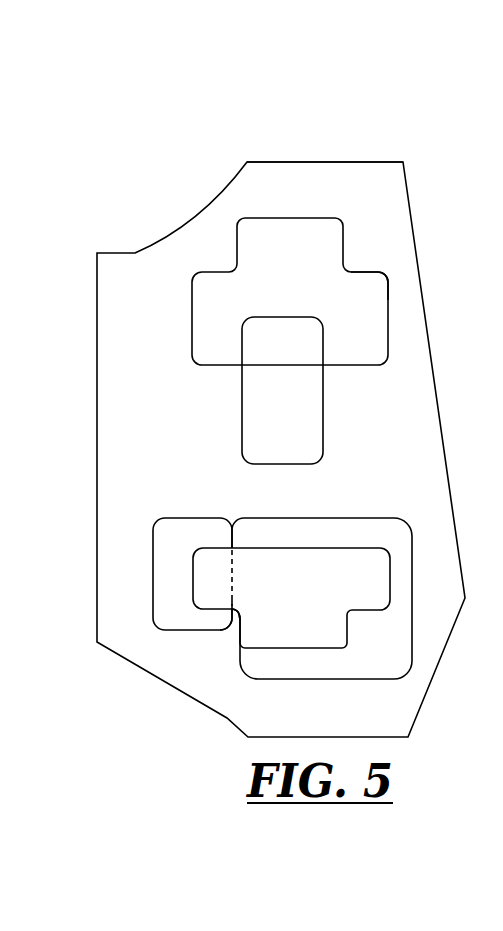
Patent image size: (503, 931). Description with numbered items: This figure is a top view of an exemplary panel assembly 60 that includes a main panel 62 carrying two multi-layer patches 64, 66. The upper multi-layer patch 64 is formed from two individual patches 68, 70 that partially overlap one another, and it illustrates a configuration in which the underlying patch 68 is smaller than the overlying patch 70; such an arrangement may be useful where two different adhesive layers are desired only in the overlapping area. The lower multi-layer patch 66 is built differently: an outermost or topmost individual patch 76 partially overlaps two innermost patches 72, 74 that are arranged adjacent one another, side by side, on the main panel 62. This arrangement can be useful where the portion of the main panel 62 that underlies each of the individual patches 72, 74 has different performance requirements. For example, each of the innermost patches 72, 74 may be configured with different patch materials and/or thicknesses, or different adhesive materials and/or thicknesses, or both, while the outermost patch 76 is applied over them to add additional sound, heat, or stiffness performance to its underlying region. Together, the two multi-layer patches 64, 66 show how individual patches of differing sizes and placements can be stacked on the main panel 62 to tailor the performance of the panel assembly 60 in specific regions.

The panel assembly 60 is at (108, 143).
The main panel 62 is at (288, 178).
The multi-layer patch 64 is at (187, 262).
The multi-layer patch 66 is at (227, 635).
The individual patch 68 is at (308, 407).
The individual patch 70 is at (363, 293).
The innermost patch 72 is at (168, 532).
The innermost patch 74 is at (252, 532).
The outermost patch 76 is at (290, 570).